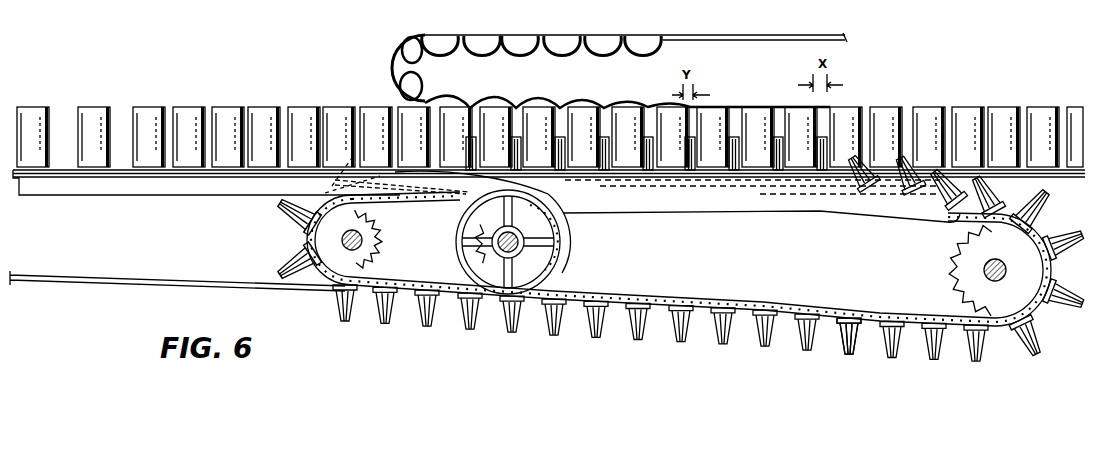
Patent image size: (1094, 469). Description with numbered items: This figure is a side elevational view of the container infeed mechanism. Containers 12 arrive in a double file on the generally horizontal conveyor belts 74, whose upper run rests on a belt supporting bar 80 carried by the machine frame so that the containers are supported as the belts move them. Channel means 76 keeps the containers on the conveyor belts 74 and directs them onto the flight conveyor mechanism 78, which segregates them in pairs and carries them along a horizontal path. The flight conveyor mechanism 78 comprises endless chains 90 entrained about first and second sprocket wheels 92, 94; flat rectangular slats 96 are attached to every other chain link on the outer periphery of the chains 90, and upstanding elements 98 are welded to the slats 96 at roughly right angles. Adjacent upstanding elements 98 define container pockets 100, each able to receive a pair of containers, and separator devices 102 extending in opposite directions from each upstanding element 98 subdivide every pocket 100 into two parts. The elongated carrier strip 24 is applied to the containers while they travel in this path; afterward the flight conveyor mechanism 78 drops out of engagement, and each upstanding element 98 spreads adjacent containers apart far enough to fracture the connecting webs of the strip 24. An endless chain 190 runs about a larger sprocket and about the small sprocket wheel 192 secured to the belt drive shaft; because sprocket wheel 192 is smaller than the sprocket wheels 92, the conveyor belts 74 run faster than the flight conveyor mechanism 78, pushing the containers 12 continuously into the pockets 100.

The containers 12 is at (138, 108).
The carrier strip 24 is at (722, 34).
The conveyor belts 74 is at (72, 183).
The belt supporting bar 80 is at (124, 196).
The channel means 76 is at (426, 266).
The flight conveyor mechanism 78 is at (547, 337).
The endless chains 90 is at (726, 299).
The first sprocket wheels 92 is at (312, 238).
The second sprocket wheels 94 is at (955, 282).
The slats 96 is at (768, 334).
The upstanding elements 98 is at (680, 333).
The container pockets 100 is at (870, 344).
The separator devices 102 is at (585, 325).
The endless chain 190 is at (560, 255).
The small sprocket wheel 192 is at (482, 232).